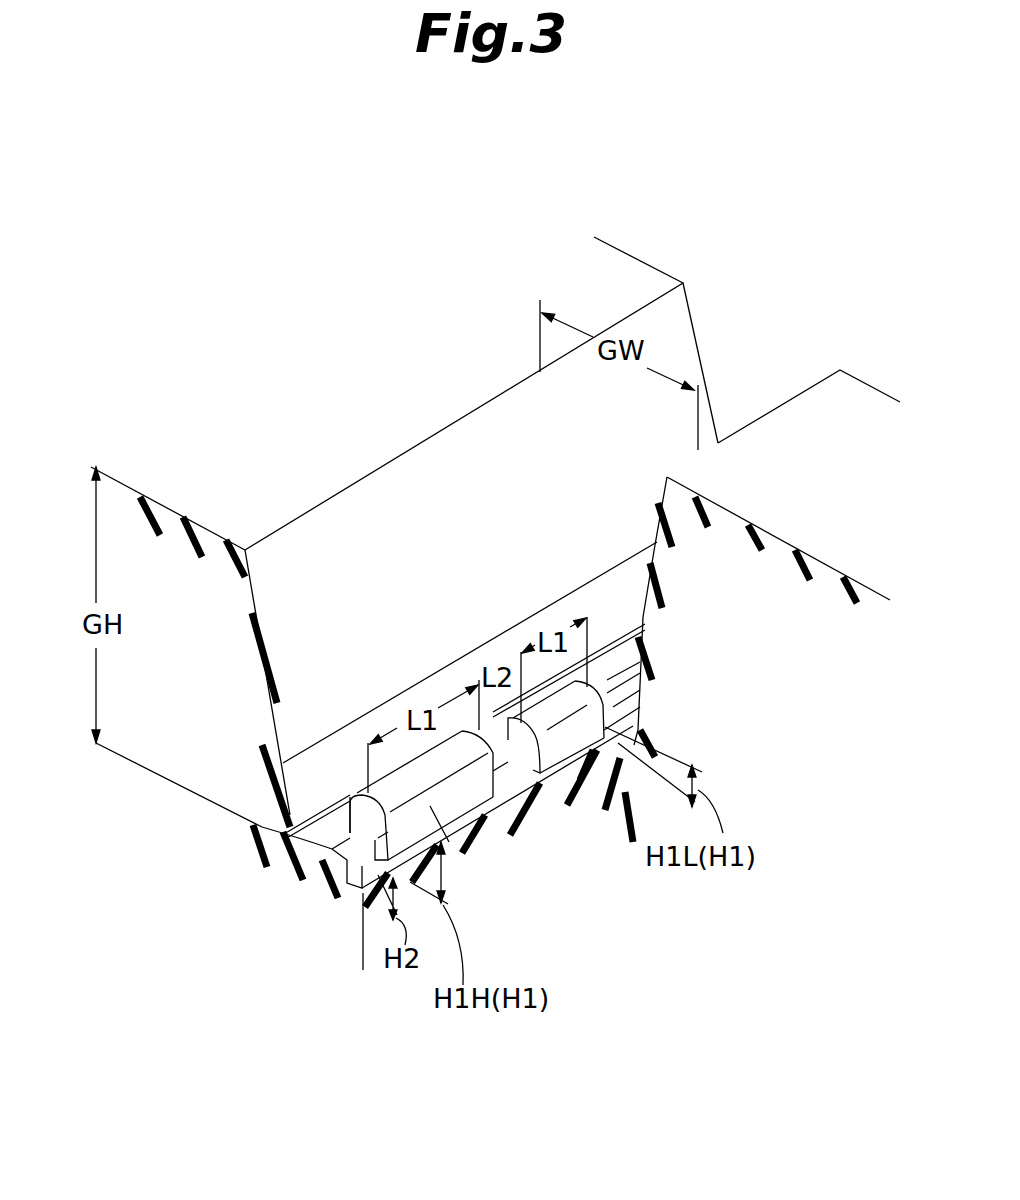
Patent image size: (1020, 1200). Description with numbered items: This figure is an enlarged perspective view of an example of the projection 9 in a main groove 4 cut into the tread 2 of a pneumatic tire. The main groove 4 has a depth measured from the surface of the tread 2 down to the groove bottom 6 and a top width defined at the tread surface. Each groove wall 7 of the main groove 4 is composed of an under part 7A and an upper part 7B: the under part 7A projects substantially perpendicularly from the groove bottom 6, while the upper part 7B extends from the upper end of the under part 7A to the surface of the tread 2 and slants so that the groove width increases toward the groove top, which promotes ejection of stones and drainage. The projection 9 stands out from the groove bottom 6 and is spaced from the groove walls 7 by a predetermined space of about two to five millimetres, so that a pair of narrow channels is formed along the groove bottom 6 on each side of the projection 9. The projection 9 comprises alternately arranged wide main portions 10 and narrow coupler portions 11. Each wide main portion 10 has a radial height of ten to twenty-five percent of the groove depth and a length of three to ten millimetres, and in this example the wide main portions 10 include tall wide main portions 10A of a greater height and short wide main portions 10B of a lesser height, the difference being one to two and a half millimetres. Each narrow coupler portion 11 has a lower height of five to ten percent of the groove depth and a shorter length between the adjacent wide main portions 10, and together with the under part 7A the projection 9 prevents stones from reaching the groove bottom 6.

The tread 2 is at (202, 505).
The main groove 4 is at (448, 522).
The groove bottom 6 is at (300, 843).
The groove wall 7 is at (430, 652).
The under part 7A is at (302, 780).
The upper part 7B is at (307, 667).
The projection 9 is at (464, 800).
The wide main portion 10 is at (477, 810).
The tall wide main portion 10A is at (433, 812).
The short wide main portion 10B is at (567, 747).
The narrow coupler portion 11 is at (607, 745).